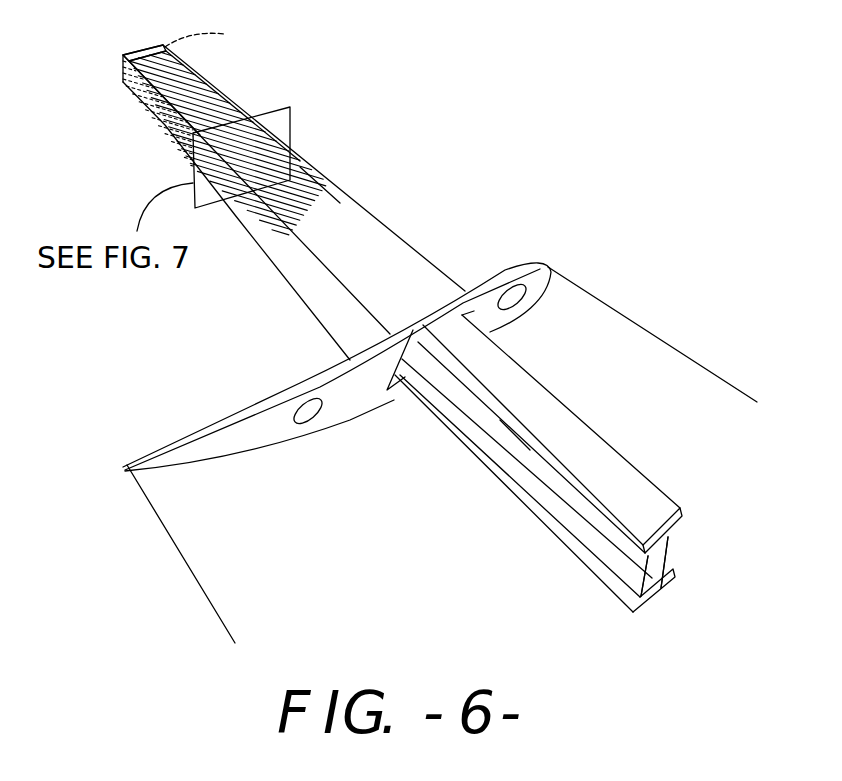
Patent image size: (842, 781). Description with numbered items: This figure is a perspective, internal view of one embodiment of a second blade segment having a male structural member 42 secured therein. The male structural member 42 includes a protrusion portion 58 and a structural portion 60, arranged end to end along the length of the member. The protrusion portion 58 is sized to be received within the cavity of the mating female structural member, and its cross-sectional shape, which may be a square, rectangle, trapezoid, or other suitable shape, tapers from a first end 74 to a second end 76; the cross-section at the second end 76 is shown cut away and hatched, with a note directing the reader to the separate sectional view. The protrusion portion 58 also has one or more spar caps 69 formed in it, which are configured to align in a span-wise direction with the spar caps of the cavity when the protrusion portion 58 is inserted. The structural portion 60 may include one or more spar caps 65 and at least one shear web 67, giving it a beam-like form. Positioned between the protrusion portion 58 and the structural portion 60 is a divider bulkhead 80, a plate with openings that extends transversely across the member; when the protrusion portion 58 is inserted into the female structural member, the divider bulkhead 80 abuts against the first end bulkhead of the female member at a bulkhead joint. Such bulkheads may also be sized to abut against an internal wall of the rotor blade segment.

The male structural member 42 is at (228, 278).
The protrusion portion 58 is at (376, 240).
The structural portion 60 is at (598, 462).
The spar caps 65 is at (527, 402).
The shear web 67 is at (666, 548).
The spar caps 69 is at (190, 96).
The first end 74 is at (400, 282).
The second end 76 is at (133, 50).
The divider bulkhead 80 is at (263, 430).